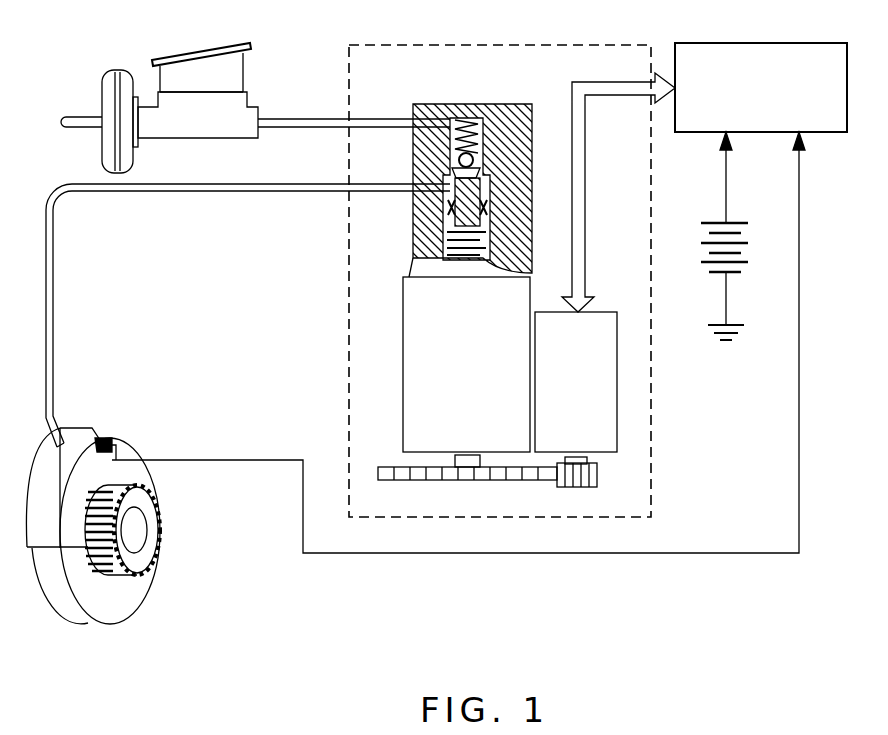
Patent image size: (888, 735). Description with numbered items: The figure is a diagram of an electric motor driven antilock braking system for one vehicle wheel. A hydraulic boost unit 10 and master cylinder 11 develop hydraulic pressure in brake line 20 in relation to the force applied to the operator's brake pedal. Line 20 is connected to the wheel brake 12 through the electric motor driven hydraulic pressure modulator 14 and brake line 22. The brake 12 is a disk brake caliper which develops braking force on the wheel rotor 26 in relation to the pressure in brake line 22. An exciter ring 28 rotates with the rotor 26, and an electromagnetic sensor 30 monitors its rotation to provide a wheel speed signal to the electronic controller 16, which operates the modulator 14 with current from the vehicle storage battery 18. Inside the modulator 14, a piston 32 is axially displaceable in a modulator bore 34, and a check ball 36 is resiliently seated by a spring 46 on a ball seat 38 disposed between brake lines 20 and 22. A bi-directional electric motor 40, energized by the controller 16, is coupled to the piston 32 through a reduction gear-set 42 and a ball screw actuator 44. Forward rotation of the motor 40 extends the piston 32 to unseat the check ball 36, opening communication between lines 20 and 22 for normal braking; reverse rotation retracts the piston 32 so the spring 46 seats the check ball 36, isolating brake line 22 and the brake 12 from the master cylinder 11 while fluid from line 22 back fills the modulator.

The hydraulic boost unit 10 is at (107, 107).
The master cylinder 11 is at (212, 117).
The wheel brake 12 is at (85, 468).
The electric motor driven hydraulic pressure modulator 14 is at (348, 318).
The electronic controller 16 is at (832, 115).
The vehicle storage battery 18 is at (742, 245).
The brake line 20 is at (345, 123).
The brake line 22 is at (160, 187).
The wheel rotor 26 is at (118, 597).
The exciter ring 28 is at (153, 542).
The electromagnetic sensor 30 is at (115, 443).
The piston 32 is at (463, 225).
The modulator bore 34 is at (485, 230).
The check ball 36 is at (483, 157).
The ball seat 38 is at (448, 168).
The bi-directional electric motor 40 is at (605, 377).
The reduction gear-set 42 is at (525, 475).
The ball screw actuator 44 is at (412, 400).
The spring 46 is at (458, 118).